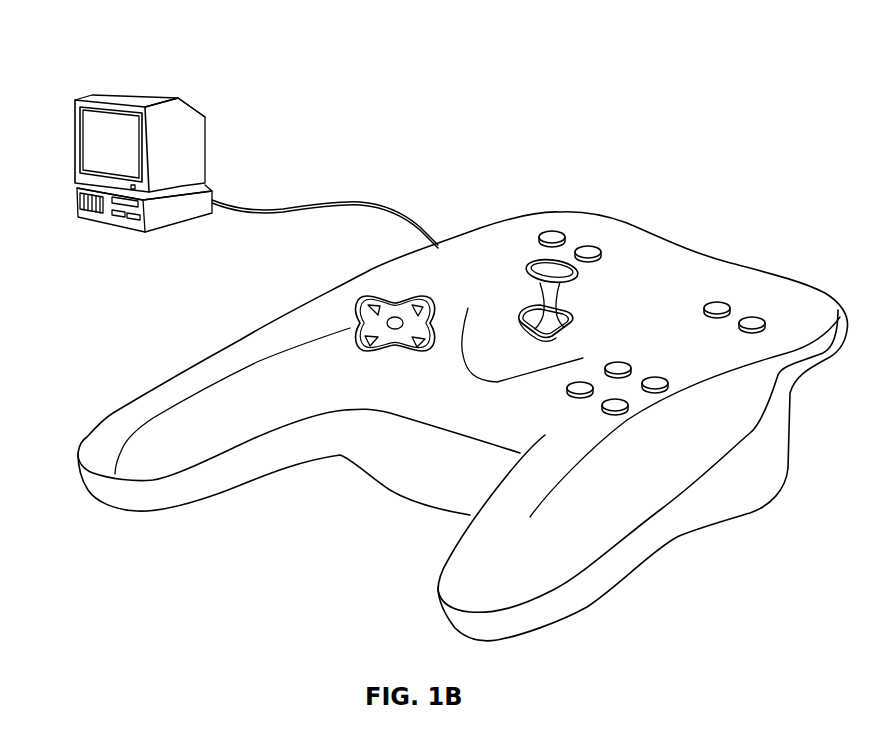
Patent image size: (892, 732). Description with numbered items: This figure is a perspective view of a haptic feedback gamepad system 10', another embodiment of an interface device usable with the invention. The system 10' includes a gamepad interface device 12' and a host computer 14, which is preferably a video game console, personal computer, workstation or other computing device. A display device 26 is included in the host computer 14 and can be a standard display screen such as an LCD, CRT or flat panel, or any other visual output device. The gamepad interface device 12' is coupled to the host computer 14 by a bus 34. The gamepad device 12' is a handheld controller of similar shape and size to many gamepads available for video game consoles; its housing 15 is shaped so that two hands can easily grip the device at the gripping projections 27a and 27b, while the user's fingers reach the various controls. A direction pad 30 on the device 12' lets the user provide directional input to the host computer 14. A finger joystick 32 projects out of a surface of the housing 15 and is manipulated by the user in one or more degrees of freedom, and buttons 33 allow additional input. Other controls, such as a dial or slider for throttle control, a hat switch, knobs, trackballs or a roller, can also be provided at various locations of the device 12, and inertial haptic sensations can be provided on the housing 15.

The gamepad system 10' is at (112, 48).
The host computer 14 is at (227, 107).
The display device 26 is at (76, 137).
The bus 34 is at (360, 201).
The device 12 is at (463, 426).
The gamepad interface device 12' is at (458, 403).
The gripping projection 27a is at (253, 416).
The gripping projection 27b is at (552, 563).
The housing 15 is at (697, 380).
The direction pad 30 is at (385, 287).
The finger joystick 32 is at (585, 293).
The buttons 33 is at (590, 244).